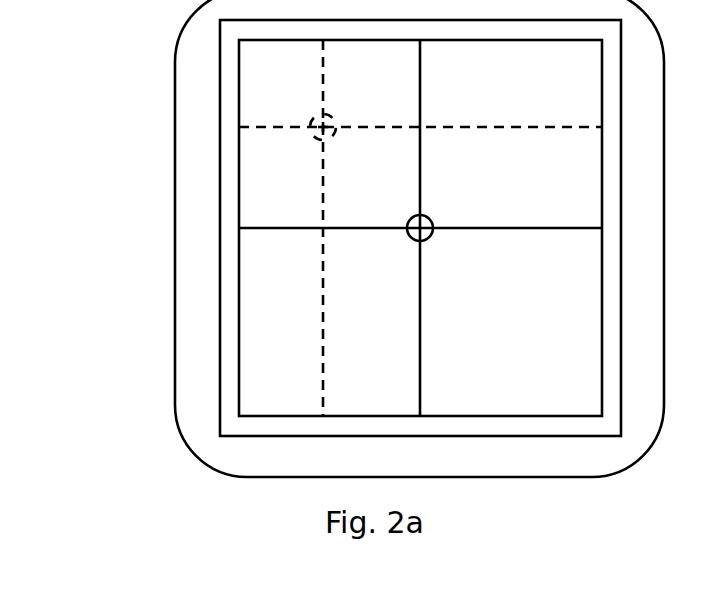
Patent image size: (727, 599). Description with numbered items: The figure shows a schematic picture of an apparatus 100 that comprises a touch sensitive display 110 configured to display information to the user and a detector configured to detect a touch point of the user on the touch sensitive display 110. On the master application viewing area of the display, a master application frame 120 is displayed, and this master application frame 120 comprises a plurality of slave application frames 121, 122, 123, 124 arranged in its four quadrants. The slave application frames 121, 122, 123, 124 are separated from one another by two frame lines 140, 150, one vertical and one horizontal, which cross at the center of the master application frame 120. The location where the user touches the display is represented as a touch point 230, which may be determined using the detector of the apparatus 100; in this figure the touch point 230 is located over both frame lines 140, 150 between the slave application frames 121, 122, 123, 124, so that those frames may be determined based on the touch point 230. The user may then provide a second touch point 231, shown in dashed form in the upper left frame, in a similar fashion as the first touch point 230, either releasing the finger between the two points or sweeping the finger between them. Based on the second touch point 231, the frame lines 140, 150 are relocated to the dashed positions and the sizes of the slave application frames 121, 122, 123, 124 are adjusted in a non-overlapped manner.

The apparatus 100 is at (176, 62).
The touch sensitive display 110 is at (220, 132).
The master application frame 120 is at (239, 255).
The slave application frame 121 is at (329, 134).
The slave application frame 122 is at (511, 134).
The slave application frame 123 is at (329, 322).
The slave application frame 124 is at (511, 322).
The frame line 140 is at (420, 340).
The frame line 150 is at (493, 227).
The touch point 230 is at (433, 218).
The second touch point 231 is at (336, 118).